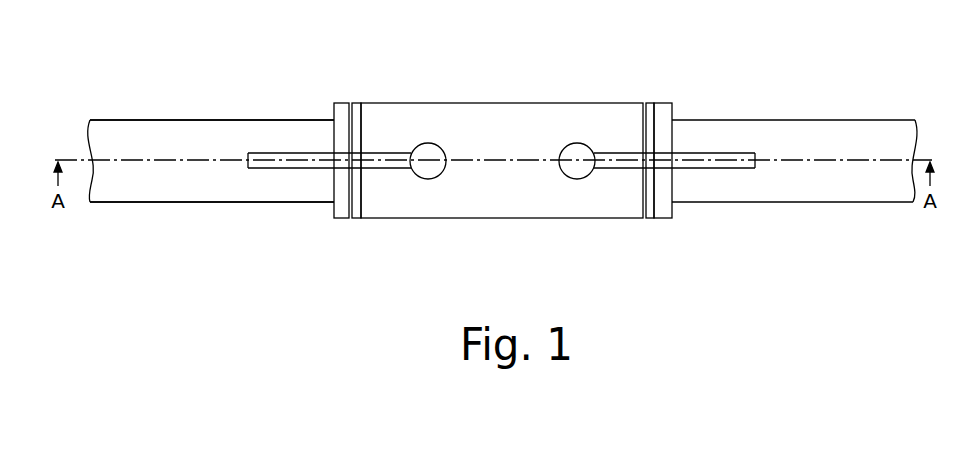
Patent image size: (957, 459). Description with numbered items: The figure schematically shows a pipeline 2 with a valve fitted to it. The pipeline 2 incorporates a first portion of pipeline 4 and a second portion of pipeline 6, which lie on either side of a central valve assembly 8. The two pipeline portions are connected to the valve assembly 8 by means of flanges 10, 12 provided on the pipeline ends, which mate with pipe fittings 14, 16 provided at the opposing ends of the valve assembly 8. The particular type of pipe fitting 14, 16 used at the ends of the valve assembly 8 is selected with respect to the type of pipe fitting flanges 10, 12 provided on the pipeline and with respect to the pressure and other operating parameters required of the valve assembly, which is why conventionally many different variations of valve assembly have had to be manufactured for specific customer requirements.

The pipeline 2 is at (208, 205).
The first portion of pipeline 4 is at (173, 136).
The second portion of pipeline 6 is at (785, 130).
The valve assembly 8 is at (498, 120).
The flange 10 is at (343, 212).
The flange 12 is at (661, 212).
The pipe fitting 14 is at (357, 125).
The pipe fitting 16 is at (650, 120).